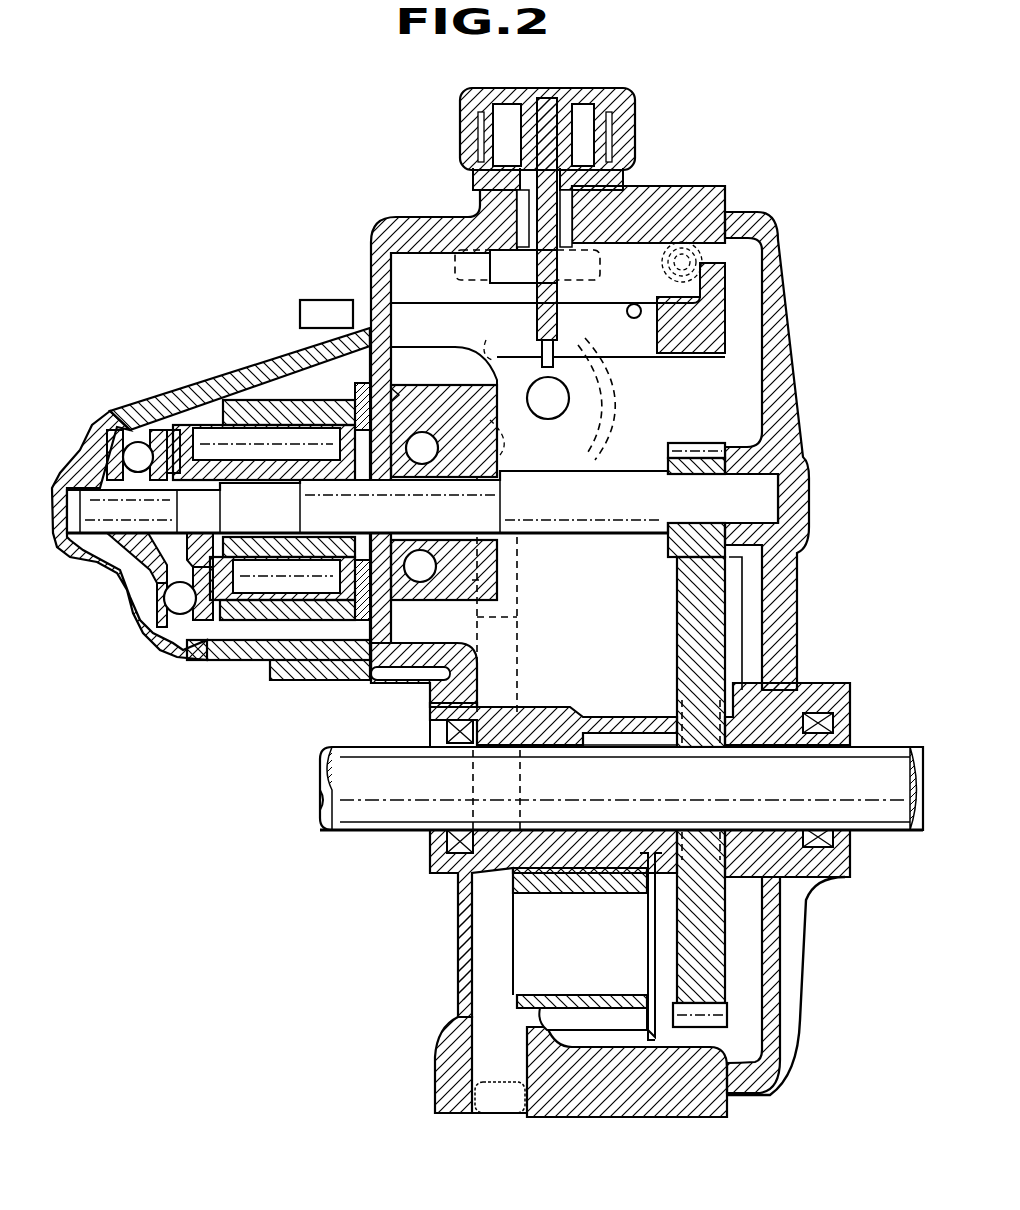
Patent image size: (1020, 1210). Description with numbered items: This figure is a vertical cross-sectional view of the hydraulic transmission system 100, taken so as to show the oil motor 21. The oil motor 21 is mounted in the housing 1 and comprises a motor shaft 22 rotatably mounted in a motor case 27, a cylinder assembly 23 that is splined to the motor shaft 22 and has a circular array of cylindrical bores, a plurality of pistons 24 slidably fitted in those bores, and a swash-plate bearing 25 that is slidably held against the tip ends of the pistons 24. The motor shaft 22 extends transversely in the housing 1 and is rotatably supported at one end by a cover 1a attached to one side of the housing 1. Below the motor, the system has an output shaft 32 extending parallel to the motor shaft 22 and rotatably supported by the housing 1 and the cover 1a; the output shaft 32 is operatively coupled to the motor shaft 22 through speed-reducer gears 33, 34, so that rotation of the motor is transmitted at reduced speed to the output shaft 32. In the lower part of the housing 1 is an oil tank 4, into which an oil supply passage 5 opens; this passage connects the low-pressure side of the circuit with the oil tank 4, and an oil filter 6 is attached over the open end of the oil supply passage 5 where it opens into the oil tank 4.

The hydraulic transmission system 100 is at (360, 153).
The housing 1 is at (440, 962).
The cover 1a is at (770, 344).
The oil tank 4 is at (620, 1035).
The oil supply passage 5 is at (490, 937).
The oil filter 6 is at (650, 932).
The oil motor 21 is at (316, 380).
The motor shaft 22 is at (592, 508).
The cylinder assembly 23 is at (244, 617).
The pistons 24 is at (170, 400).
The swash-plate bearing 25 is at (112, 412).
The motor case 27 is at (152, 652).
The output shaft 32 is at (607, 745).
The speed-reducer gear 33 is at (688, 443).
The speed-reducer gear 34 is at (725, 1010).